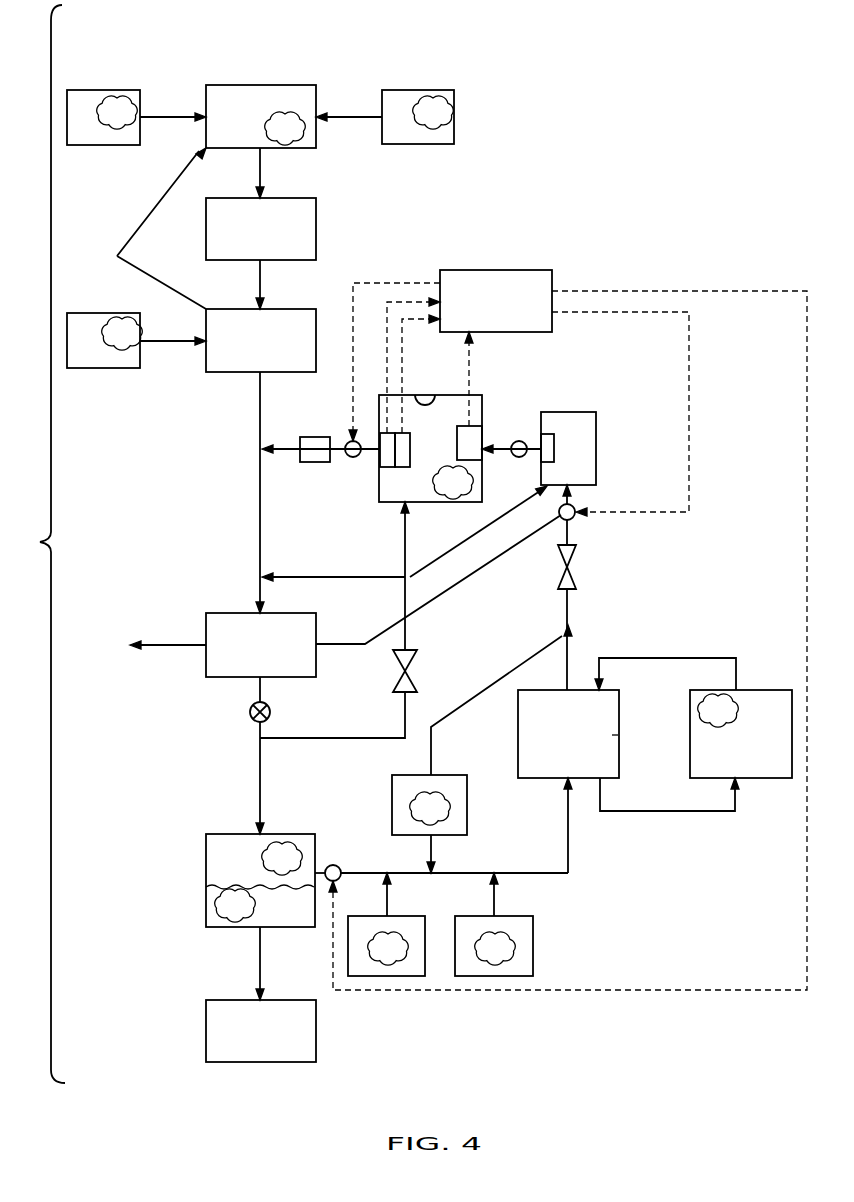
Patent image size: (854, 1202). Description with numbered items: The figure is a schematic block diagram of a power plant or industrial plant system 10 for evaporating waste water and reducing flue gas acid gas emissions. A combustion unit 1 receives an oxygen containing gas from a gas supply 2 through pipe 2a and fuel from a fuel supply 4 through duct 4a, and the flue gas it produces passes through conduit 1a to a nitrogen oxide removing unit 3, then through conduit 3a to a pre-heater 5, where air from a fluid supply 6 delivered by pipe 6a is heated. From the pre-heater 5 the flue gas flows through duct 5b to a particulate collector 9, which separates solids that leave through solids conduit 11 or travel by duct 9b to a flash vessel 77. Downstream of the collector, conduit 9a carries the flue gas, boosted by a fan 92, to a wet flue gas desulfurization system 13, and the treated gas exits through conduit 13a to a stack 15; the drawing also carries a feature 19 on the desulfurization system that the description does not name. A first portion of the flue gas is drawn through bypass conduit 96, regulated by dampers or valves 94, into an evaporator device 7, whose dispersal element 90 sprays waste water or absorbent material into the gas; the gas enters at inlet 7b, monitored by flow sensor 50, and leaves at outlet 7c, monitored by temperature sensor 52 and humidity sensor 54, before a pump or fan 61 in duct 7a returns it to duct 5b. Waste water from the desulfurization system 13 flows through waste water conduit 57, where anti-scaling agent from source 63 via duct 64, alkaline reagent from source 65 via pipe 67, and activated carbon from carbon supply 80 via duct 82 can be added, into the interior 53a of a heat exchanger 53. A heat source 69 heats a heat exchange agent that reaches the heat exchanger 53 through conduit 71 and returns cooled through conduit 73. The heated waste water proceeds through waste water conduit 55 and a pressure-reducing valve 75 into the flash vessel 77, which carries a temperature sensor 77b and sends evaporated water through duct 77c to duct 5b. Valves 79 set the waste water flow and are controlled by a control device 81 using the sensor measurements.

The combustion unit 1 is at (264, 85).
The conduit 1a is at (264, 165).
The gas supply 2 is at (90, 89).
The pipe 2a is at (173, 110).
The nitrogen oxide removing unit 3 is at (316, 222).
The conduit 3a is at (264, 277).
The fuel supply 4 is at (406, 90).
The duct 4a is at (348, 110).
The pre-heater 5 is at (228, 375).
The duct 5b is at (258, 465).
The fluid supply 6 is at (86, 313).
The pipe 6a is at (158, 346).
The evaporator device 7 is at (450, 395).
The output conduit 7a is at (282, 455).
The inlet 7b is at (492, 430).
The outlet 7c is at (370, 433).
The particulate collector 9 is at (228, 612).
The conduit 9a is at (258, 780).
The duct 9b is at (345, 650).
The system 10 is at (40, 542).
The solids conduit 11 is at (172, 637).
The wet flue gas desulfurization system 13 is at (205, 853).
The conduit 13a is at (258, 963).
The stack 15 is at (205, 1030).
The liquid level 19 is at (291, 930).
The flow sensor 50 is at (456, 452).
The temperature sensor 52 is at (386, 498).
The heat exchanger 53 is at (536, 788).
The interior 53a is at (612, 735).
The humidity sensor 54 is at (402, 478).
The waste water conduit 55 is at (573, 636).
The waste water conduit 57 is at (570, 850).
The pump or fan 61 is at (315, 464).
The anti-scaling agent source 63 is at (415, 977).
The duct 64 is at (389, 893).
The alkaline reagent source 65 is at (525, 977).
The pipe 67 is at (496, 893).
The heat source 69 is at (766, 788).
The conduit 71 is at (700, 657).
The conduit 73 is at (666, 820).
The valve 75 is at (578, 572).
The flash vessel 77 is at (597, 430).
The temperature sensor 77b is at (550, 447).
The duct 77c is at (503, 455).
The valves 79 is at (353, 460).
The carbon supply 80 is at (391, 780).
The control device 81 is at (495, 270).
The duct 82 is at (435, 750).
The dispersal element 90 is at (425, 392).
The fan 92 is at (249, 713).
The dampers or valves 94 is at (418, 660).
The bypass conduit 96 is at (278, 742).